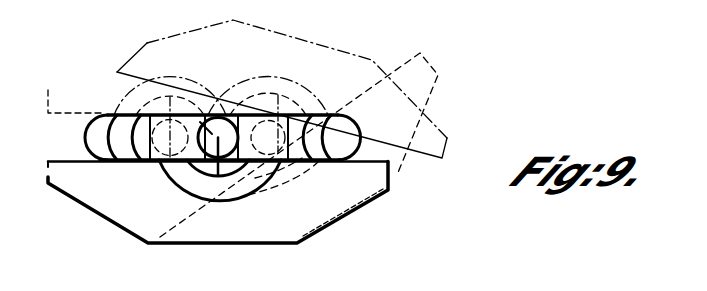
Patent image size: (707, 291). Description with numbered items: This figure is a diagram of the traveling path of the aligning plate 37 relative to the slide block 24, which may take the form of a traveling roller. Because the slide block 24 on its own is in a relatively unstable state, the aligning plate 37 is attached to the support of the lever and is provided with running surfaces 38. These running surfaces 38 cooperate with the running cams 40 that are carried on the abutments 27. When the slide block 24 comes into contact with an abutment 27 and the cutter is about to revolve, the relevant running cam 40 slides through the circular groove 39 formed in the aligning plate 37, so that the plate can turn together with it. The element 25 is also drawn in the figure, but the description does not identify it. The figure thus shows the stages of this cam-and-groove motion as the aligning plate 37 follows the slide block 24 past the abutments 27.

The slide block 24 is at (205, 115).
The roller 25 is at (238, 115).
The abutment 27 is at (127, 133).
The aligning plate 37 is at (303, 218).
The running surfaces 38 is at (68, 161).
The circular groove 39 is at (195, 182).
The running cam 40 is at (107, 114).